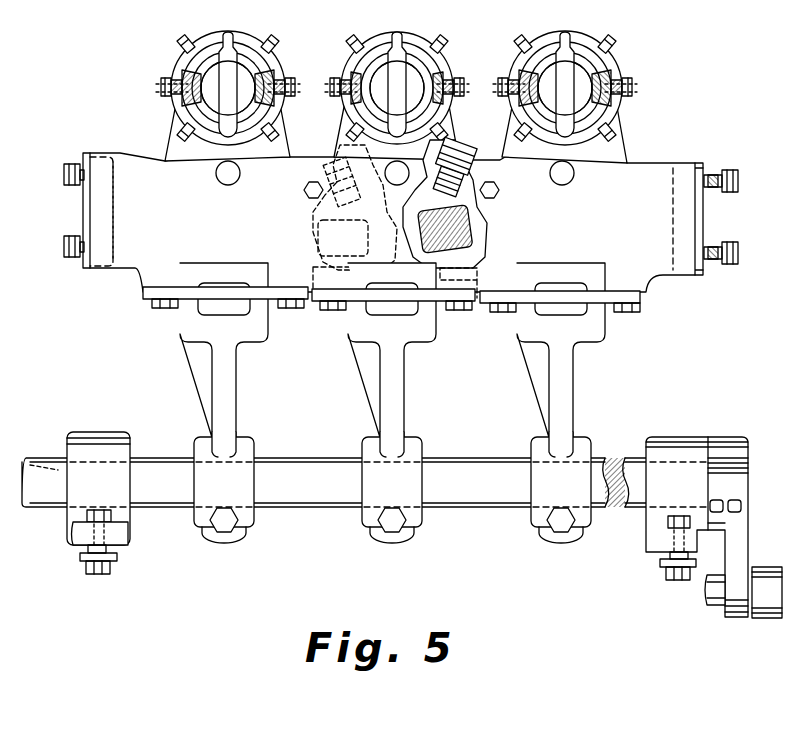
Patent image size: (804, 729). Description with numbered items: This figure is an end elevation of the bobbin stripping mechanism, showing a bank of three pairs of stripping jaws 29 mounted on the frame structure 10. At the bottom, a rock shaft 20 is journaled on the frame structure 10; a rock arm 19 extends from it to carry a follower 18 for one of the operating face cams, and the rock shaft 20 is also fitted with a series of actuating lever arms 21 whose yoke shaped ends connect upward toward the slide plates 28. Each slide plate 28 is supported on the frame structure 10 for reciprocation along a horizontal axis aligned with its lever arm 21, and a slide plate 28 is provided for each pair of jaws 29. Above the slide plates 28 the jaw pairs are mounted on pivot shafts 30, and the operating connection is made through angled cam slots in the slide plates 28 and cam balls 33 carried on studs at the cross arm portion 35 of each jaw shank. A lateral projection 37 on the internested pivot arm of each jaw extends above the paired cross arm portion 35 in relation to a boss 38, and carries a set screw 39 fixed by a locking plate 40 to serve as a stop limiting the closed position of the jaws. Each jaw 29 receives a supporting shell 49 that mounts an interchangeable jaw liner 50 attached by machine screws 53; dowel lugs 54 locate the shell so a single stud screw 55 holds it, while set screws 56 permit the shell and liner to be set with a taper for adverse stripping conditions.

The frame structure 10 is at (663, 277).
The follower 18 is at (766, 620).
The rock arm 19 is at (750, 530).
The rock shaft 20 is at (636, 466).
The actuating lever arm 21 is at (237, 380).
The slide plate 28 is at (193, 286).
The stripping jaw 29 is at (178, 62).
The pivot shaft 30 is at (222, 163).
The cam ball 33 is at (322, 262).
The cross arm portion 35 is at (320, 232).
The lateral projection 37 is at (330, 190).
The boss 38 is at (406, 226).
The set screw 39 is at (320, 208).
The locking plate 40 is at (336, 158).
The supporting shell 49 is at (229, 32).
The jaw liner 50 is at (219, 70).
The machine screw 53 is at (182, 99).
The dowel lug 54 is at (350, 100).
The stud screw 55 is at (160, 86).
The set screw 56 is at (186, 36).